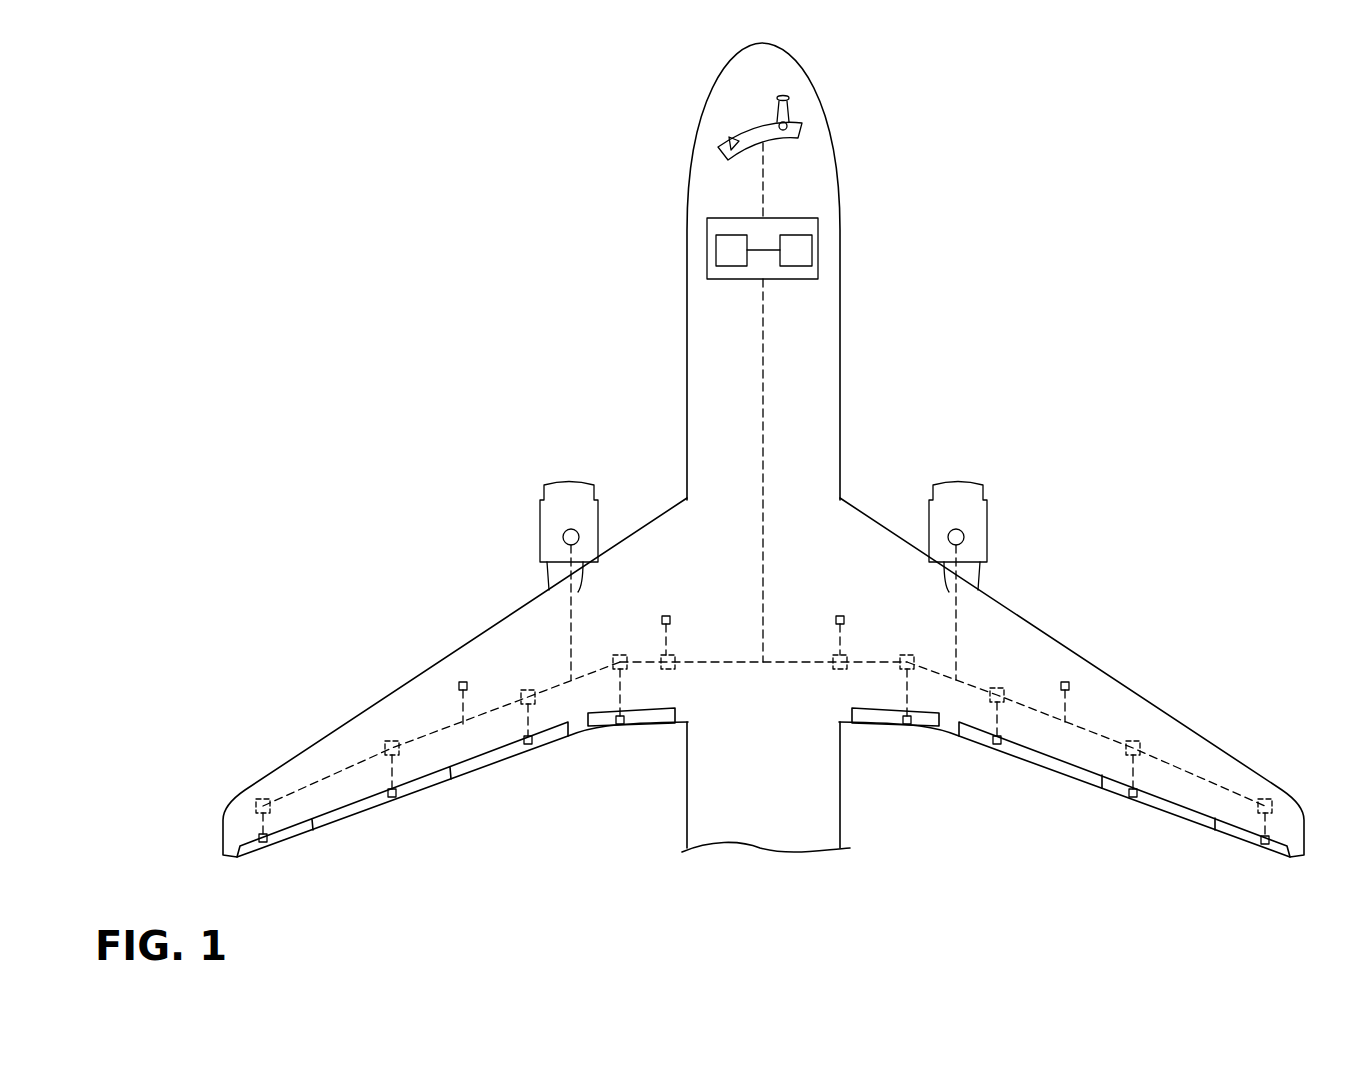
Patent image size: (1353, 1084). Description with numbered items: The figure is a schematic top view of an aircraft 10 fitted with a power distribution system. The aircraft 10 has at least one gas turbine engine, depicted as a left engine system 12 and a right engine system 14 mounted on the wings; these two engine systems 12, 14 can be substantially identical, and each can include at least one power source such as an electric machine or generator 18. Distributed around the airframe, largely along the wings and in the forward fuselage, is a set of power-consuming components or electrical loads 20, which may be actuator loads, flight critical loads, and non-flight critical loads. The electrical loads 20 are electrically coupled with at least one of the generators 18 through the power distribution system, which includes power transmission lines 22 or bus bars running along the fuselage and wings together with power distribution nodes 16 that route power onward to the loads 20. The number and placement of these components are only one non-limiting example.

The aircraft 10 is at (584, 208).
The left engine system 12 is at (567, 492).
The right engine system 14 is at (968, 492).
The power distribution node 16 is at (275, 808).
The generator 18 is at (579, 533).
The electrical load 20 is at (716, 246).
The power transmission line 22 is at (765, 375).